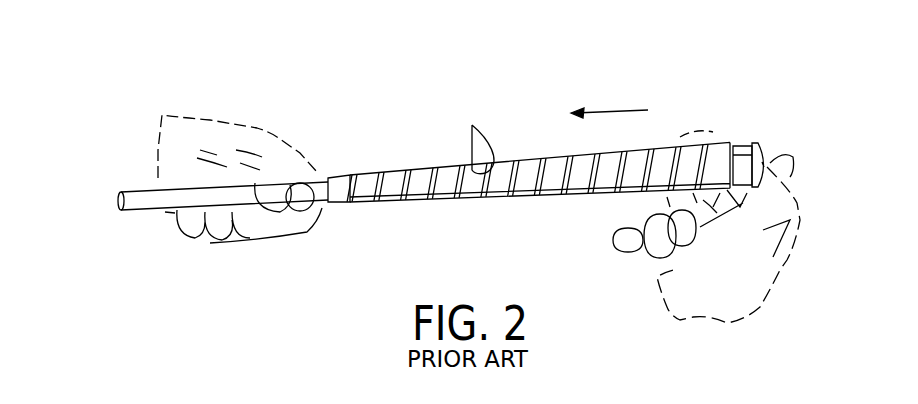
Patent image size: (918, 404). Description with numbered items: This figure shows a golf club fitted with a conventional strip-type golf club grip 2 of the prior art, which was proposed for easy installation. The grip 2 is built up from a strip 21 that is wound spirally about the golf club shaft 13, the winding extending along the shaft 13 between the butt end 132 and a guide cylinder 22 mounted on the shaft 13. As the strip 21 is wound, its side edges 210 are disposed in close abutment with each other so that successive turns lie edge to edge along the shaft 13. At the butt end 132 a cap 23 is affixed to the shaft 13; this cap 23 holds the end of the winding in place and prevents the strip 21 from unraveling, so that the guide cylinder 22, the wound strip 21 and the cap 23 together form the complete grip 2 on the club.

The strip-type golf club grip 2 is at (535, 141).
The golf club shaft 13 is at (132, 195).
The butt end 132 is at (736, 148).
The strip 21 is at (422, 178).
The side edges 210 is at (472, 125).
The guide cylinder 22 is at (340, 178).
The cap 23 is at (753, 143).